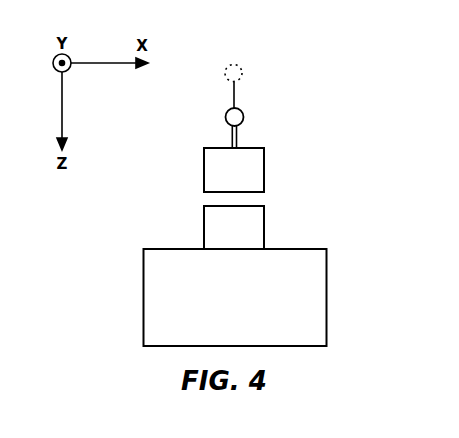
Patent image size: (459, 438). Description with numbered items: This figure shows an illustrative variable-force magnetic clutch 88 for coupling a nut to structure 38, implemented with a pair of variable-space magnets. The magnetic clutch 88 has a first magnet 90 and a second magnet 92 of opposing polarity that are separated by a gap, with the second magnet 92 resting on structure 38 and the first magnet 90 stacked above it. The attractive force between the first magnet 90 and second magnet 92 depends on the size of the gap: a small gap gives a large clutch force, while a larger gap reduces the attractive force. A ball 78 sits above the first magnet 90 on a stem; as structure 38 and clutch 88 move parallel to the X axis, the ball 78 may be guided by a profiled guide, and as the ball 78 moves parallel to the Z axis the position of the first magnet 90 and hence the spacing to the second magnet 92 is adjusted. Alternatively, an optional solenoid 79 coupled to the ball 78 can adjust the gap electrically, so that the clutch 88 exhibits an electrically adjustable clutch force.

The structure 38 is at (316, 298).
The ball 78 is at (236, 117).
The optional solenoid 79 is at (242, 70).
The magnetic clutch 88 is at (180, 149).
The first magnet 90 is at (258, 168).
The second magnet 92 is at (258, 223).